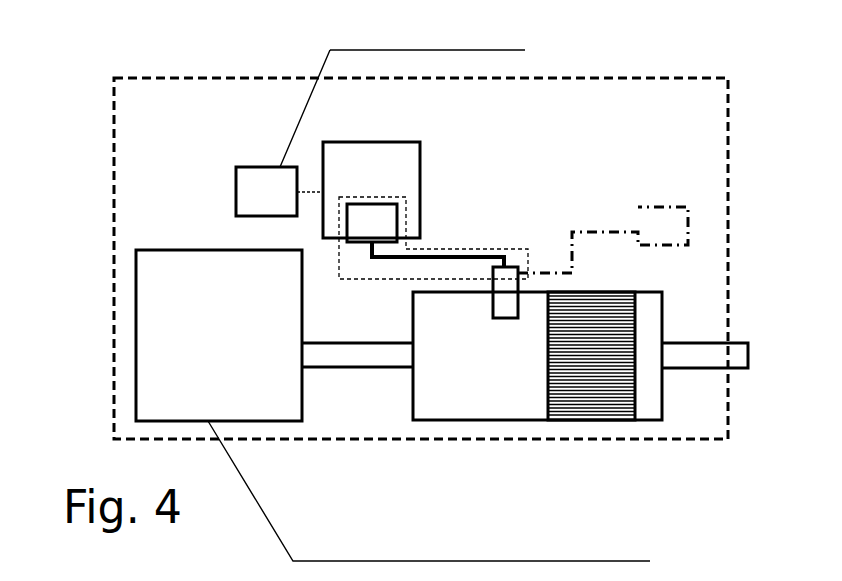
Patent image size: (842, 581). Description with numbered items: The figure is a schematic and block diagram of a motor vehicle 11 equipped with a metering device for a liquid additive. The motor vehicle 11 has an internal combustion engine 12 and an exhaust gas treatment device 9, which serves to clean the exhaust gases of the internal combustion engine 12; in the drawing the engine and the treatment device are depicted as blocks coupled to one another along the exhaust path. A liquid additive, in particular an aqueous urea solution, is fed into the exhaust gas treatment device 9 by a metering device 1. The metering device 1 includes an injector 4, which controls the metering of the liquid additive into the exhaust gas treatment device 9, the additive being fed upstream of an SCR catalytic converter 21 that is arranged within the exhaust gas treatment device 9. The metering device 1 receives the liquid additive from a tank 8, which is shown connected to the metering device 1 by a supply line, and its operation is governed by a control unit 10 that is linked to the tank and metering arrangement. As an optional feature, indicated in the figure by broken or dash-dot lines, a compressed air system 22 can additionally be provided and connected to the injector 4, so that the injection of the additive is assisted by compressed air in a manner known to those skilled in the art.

The motor vehicle 11 is at (114, 78).
The internal combustion engine 12 is at (208, 250).
The exhaust gas treatment device 9 is at (426, 402).
The SCR catalytic converter 21 is at (570, 403).
The control unit 10 is at (268, 167).
The tank 8 is at (365, 142).
The metering device 1 is at (453, 248).
The injector 4 is at (516, 267).
The compressed air system 22 is at (653, 220).